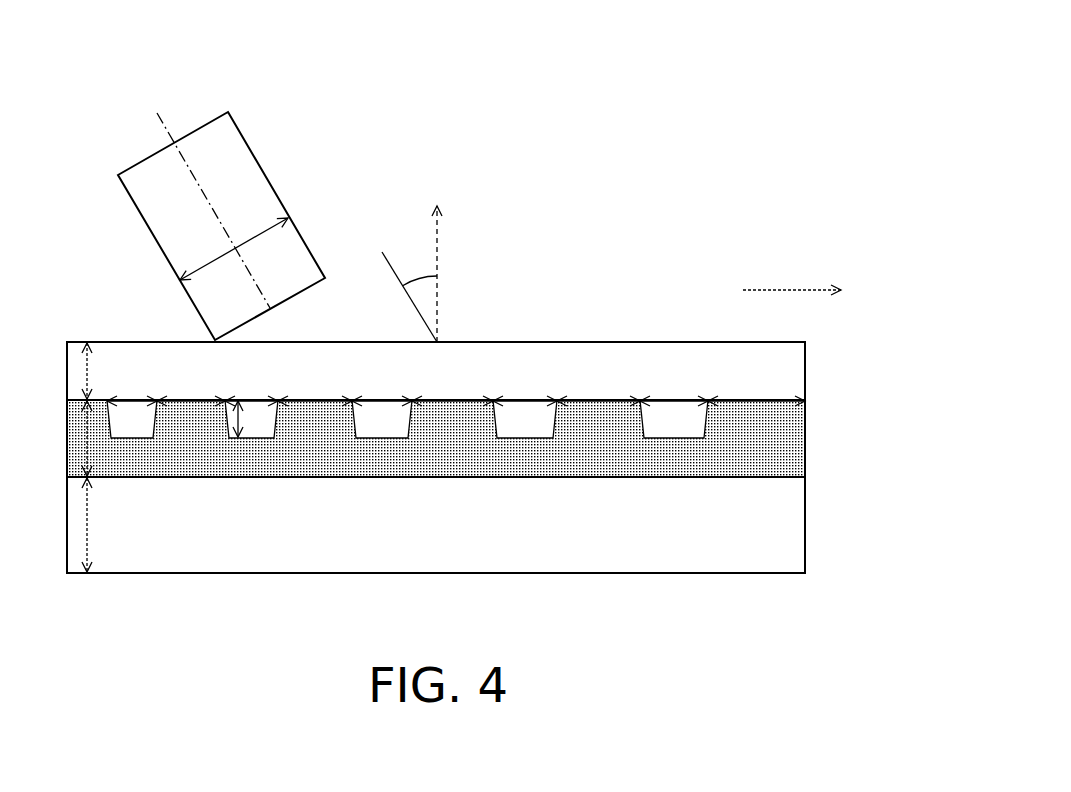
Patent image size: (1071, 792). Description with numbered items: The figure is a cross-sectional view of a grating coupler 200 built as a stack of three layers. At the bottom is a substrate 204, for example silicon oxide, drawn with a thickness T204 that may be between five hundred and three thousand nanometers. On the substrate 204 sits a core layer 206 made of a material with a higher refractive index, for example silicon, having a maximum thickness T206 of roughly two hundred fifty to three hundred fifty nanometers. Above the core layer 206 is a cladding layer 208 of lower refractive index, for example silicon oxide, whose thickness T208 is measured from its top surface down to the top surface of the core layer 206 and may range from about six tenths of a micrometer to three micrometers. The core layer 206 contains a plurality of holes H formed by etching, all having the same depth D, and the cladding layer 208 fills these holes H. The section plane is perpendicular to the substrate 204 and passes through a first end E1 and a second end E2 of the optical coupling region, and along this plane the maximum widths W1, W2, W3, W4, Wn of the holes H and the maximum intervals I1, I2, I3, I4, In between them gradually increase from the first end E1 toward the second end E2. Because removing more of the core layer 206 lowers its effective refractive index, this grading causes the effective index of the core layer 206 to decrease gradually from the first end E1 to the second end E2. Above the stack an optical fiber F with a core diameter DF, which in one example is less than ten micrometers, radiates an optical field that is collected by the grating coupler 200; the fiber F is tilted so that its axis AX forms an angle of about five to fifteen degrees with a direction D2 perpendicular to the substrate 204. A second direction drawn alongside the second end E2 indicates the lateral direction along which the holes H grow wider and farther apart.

The grating coupler 200 is at (496, 457).
The substrate 204 is at (787, 535).
The core layer 206 is at (787, 443).
The cladding layer 208 is at (466, 371).
The optical fiber F is at (237, 163).
The axis of the optical fiber AX is at (202, 191).
The core diameter DF is at (234, 240).
The first end of the optical coupling region E1 is at (50, 346).
The direction perpendicular to the substrate D2 is at (437, 253).
The second end of the optical coupling region E2 is at (830, 290).
The thickness of the cladding layer T208 is at (85, 378).
The maximum thickness of the core layer T206 is at (85, 443).
The thickness of the substrate T204 is at (85, 536).
The width of first hole W1 is at (132, 382).
The width of second hole W2 is at (251, 382).
The width of third hole W3 is at (382, 382).
The width of fourth hole W4 is at (525, 382).
The width of nth hole Wn is at (674, 382).
The first interval I1 is at (191, 382).
The second interval I2 is at (315, 382).
The third interval I3 is at (452, 382).
The fourth interval I4 is at (598, 382).
The nth interval In is at (756, 382).
The depth D is at (251, 420).
The holes H is at (645, 420).